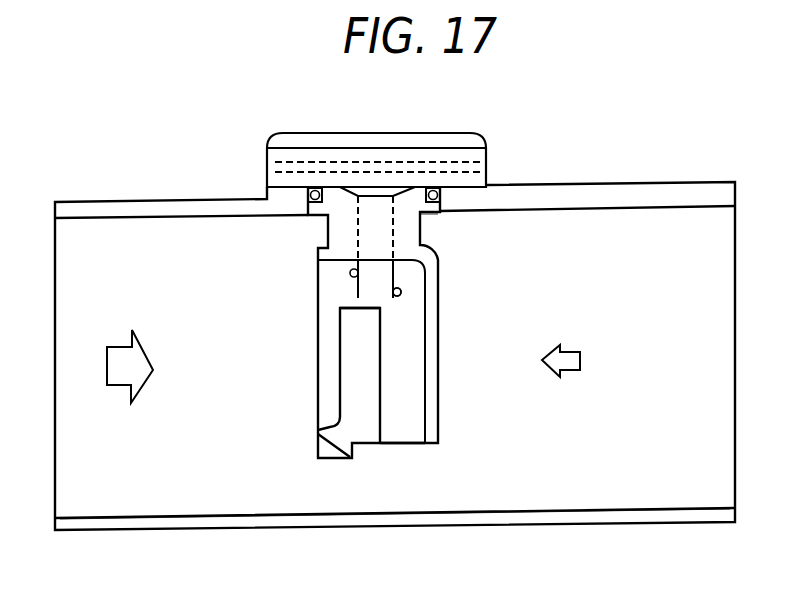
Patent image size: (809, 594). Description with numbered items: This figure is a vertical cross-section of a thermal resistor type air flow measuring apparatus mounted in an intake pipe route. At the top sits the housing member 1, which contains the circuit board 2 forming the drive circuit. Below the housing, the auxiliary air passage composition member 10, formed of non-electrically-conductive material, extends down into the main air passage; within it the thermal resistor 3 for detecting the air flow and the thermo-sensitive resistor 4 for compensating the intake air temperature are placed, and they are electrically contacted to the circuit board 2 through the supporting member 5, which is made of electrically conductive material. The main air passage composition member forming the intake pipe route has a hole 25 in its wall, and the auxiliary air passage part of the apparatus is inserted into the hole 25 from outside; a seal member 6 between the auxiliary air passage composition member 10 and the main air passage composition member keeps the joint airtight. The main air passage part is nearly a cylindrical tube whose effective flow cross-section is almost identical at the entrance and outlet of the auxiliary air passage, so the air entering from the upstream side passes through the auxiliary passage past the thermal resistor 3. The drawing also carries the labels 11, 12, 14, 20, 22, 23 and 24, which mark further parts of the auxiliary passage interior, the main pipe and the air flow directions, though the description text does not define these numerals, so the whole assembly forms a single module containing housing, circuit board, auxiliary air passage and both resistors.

The housing member 1 is at (442, 133).
The circuit board 2 is at (342, 162).
The thermal resistor 3 is at (335, 261).
The thermo-sensitive resistor 4 is at (402, 293).
The supporting member 5 is at (400, 275).
The seal member 6 is at (442, 192).
The auxiliary air passage composition member 10 is at (367, 430).
The valve chamber 11 is at (333, 308).
The valve member 12 is at (413, 432).
The inner wall 14 is at (420, 380).
The pipe 20 is at (583, 185).
The pipe wall 22 is at (558, 428).
The inflow direction 23 is at (120, 386).
The outflow direction 24 is at (578, 350).
The hole 25 is at (425, 222).